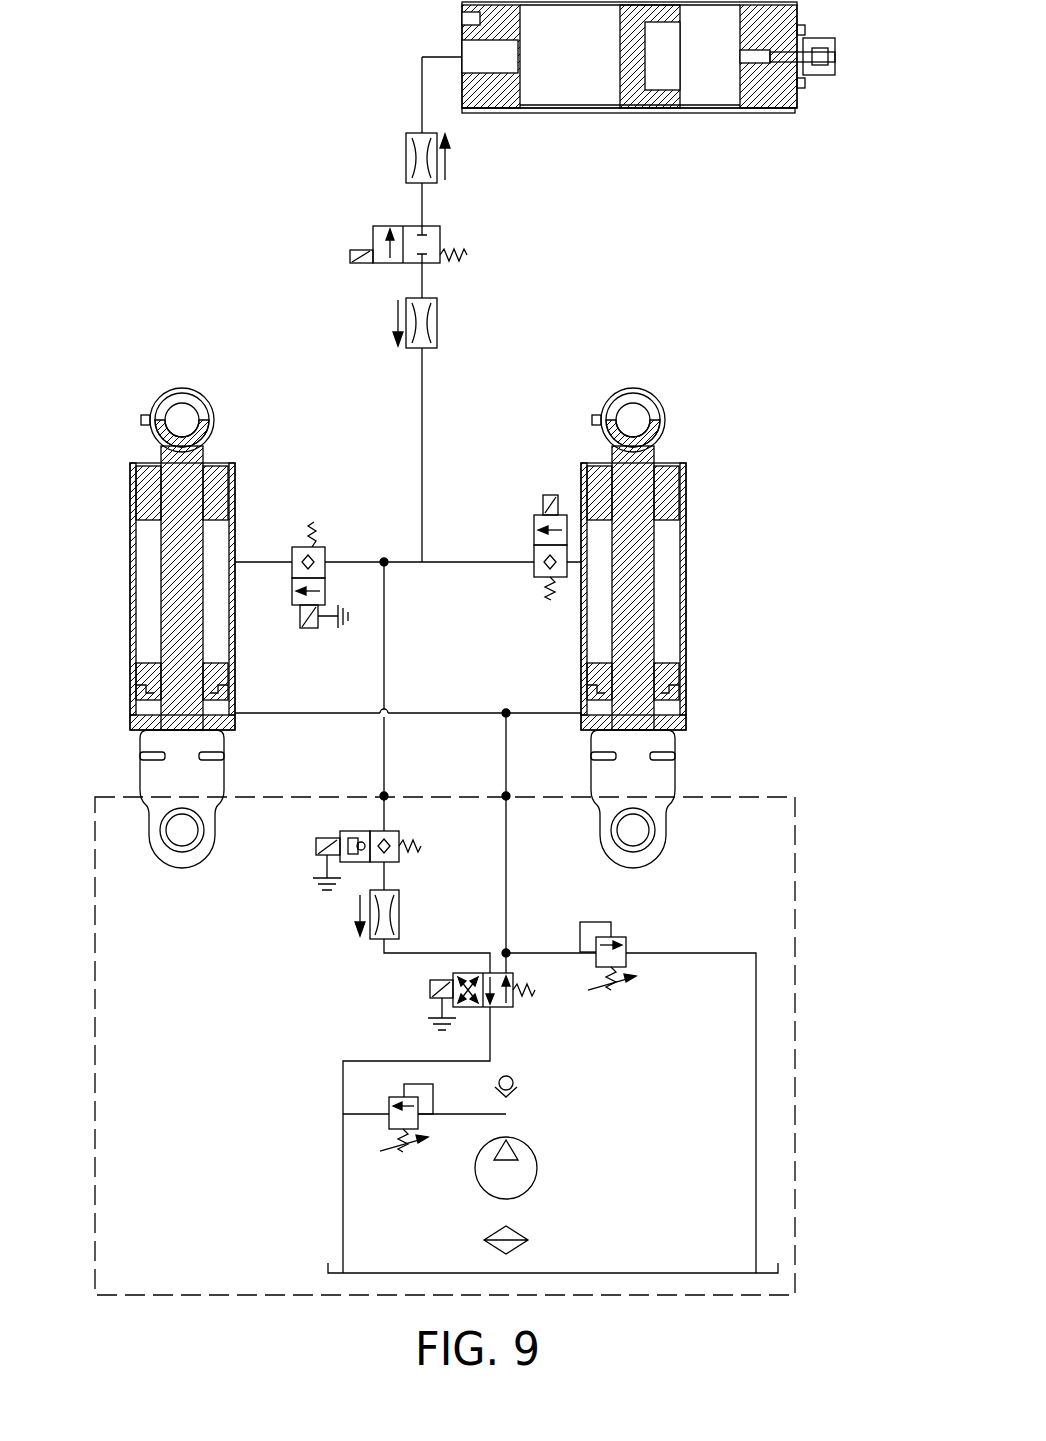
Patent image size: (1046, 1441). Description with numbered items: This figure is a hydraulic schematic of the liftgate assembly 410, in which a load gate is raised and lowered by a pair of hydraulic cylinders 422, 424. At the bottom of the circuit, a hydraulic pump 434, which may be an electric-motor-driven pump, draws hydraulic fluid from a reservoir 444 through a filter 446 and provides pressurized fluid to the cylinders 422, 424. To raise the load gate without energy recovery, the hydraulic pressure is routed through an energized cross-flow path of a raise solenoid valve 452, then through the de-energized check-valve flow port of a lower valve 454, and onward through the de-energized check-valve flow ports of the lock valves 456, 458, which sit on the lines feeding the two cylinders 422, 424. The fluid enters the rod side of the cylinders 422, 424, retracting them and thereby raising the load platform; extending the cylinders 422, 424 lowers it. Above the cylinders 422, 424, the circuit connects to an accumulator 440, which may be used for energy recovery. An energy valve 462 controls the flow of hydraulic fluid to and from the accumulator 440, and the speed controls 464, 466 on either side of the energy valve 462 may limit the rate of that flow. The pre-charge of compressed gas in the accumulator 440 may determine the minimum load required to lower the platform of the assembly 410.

The liftgate assembly 410 is at (175, 127).
The accumulator 440 is at (740, 115).
The speed control 464 is at (406, 155).
The energy valve 462 is at (440, 233).
The speed control 466 is at (437, 318).
The lock valve 456 is at (292, 555).
The lock valve 458 is at (540, 495).
The hydraulic cylinder 422 is at (130, 620).
The hydraulic cylinder 424 is at (687, 700).
The raise solenoid valve 452 is at (797, 838).
The lower valve 454 is at (395, 831).
The hydraulic pump 434 is at (475, 1170).
The filter 446 is at (520, 1246).
The reservoir 444 is at (780, 1273).